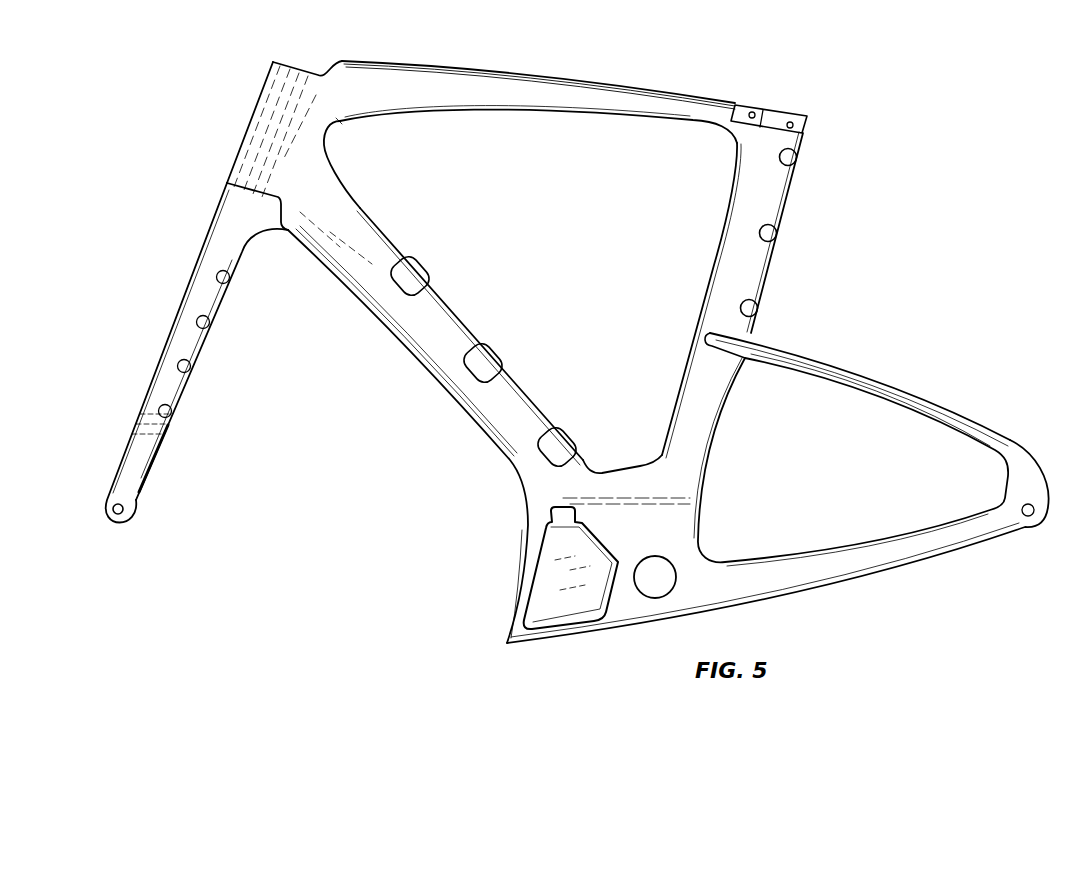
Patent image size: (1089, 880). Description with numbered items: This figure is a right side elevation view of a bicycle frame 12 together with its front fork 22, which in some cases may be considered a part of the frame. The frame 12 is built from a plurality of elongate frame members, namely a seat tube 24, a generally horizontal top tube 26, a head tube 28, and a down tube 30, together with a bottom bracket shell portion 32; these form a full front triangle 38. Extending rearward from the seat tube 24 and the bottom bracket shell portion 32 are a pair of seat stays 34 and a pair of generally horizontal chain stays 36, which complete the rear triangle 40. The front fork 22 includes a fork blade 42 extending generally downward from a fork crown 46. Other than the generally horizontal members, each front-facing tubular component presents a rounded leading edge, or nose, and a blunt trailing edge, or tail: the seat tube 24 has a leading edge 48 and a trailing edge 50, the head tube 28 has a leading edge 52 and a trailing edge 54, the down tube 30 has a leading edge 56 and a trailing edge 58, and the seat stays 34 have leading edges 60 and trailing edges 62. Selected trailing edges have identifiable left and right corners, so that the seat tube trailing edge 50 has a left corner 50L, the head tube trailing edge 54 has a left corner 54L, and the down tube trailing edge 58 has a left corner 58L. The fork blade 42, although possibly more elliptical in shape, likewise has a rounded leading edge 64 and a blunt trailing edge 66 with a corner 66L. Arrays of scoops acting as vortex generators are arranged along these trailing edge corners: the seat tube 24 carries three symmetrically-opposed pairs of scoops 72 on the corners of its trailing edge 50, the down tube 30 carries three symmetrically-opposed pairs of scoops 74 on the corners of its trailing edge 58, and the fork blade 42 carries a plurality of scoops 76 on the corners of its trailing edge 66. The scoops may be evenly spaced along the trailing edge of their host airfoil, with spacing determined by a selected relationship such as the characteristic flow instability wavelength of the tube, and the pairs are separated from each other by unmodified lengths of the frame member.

The frame 12 is at (801, 64).
The front fork 22 is at (144, 245).
The seat tube 24 is at (733, 203).
The top tube 26 is at (557, 110).
The head tube 28 is at (303, 130).
The down tube 30 is at (355, 210).
The bottom bracket shell portion 32 is at (684, 601).
The seat stays 34 is at (893, 390).
The chain stays 36 is at (947, 543).
The front triangle 38 is at (576, 56).
The rear triangle 40 is at (930, 312).
The fork blade 42 is at (117, 484).
The fork crown 46 is at (226, 200).
The leading edge 48 is at (710, 253).
The trailing edge 50 is at (788, 268).
The left corner 50L is at (762, 296).
The leading edge 52 is at (248, 101).
The trailing edge 54 is at (343, 152).
The left corner 54L is at (322, 110).
The leading edge 56 is at (374, 335).
The trailing edge 58 is at (475, 307).
The left corner 58L is at (530, 398).
The leading edges 60 is at (942, 440).
The trailing edges 62 is at (969, 409).
The leading edge 64 is at (124, 407).
The trailing edge 66 is at (201, 393).
The corner 66L is at (203, 351).
The scoops 72 is at (774, 231).
The scoops 74 is at (413, 274).
The scoops 76 is at (229, 280).